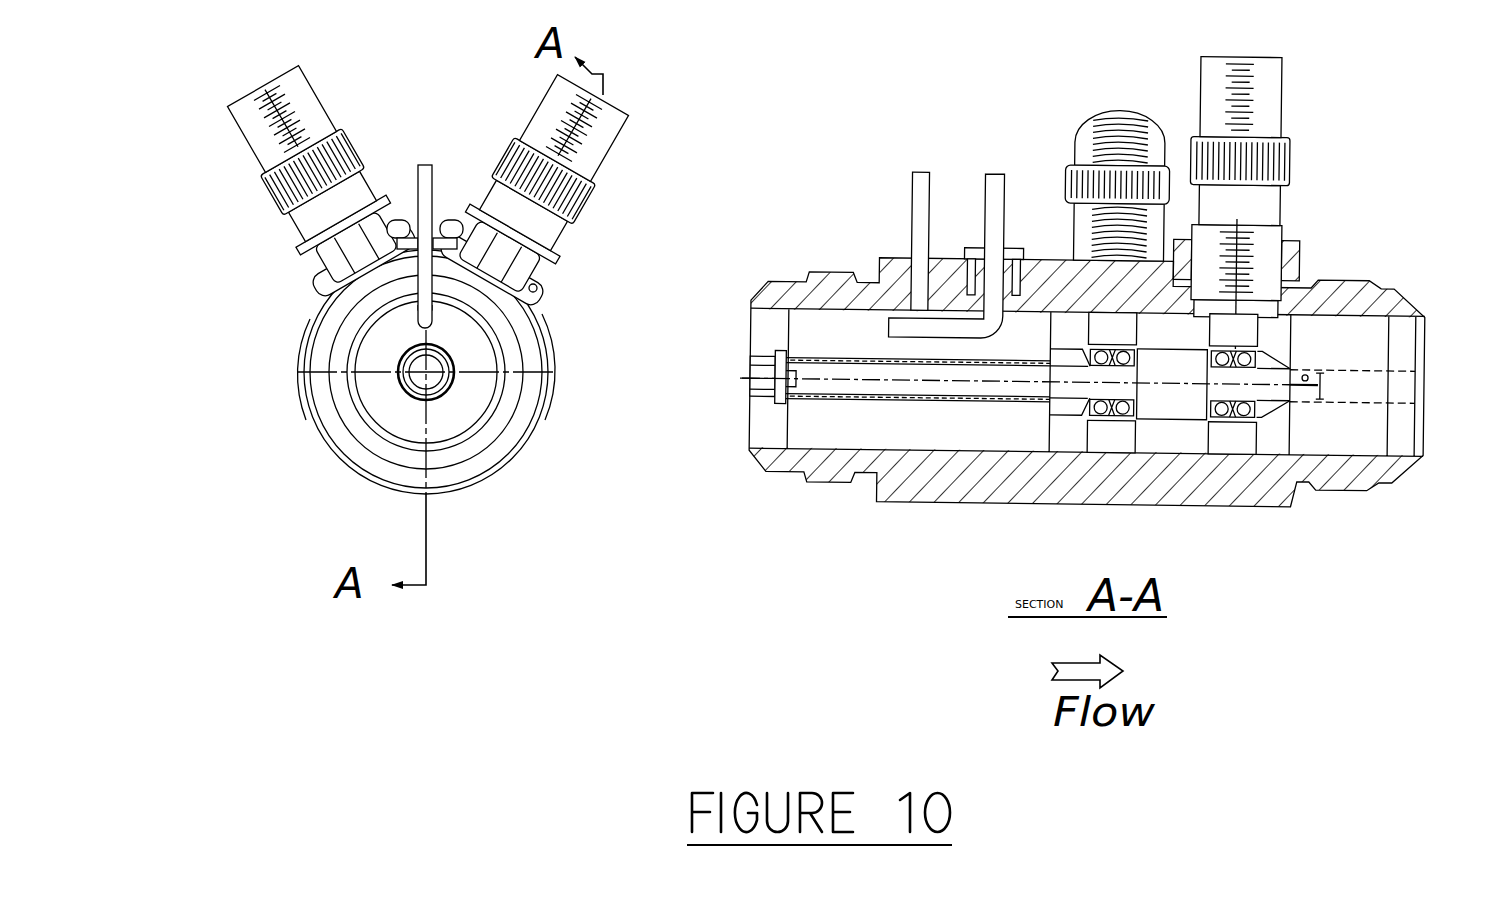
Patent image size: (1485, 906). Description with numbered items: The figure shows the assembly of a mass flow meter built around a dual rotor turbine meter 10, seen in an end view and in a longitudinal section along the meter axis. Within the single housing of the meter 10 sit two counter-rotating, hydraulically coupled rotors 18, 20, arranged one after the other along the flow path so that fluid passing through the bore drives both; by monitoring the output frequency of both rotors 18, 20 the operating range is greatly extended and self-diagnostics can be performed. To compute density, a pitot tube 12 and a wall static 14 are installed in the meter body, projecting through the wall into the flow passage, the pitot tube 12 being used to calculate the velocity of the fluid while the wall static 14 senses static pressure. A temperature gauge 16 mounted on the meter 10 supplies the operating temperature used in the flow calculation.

The dual rotor turbine meter 10 is at (888, 503).
The pitot tube 12 is at (413, 322).
The wall static 14 is at (434, 163).
The temperature gauge 16 is at (460, 306).
The rotor 18 is at (1085, 447).
The rotor 20 is at (1262, 447).